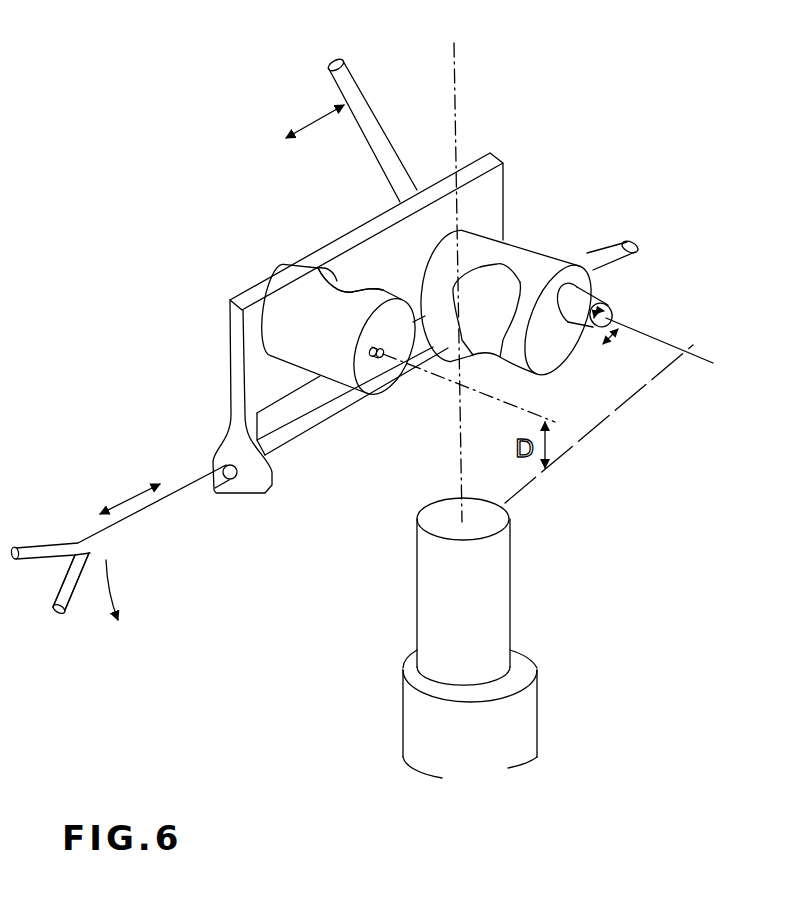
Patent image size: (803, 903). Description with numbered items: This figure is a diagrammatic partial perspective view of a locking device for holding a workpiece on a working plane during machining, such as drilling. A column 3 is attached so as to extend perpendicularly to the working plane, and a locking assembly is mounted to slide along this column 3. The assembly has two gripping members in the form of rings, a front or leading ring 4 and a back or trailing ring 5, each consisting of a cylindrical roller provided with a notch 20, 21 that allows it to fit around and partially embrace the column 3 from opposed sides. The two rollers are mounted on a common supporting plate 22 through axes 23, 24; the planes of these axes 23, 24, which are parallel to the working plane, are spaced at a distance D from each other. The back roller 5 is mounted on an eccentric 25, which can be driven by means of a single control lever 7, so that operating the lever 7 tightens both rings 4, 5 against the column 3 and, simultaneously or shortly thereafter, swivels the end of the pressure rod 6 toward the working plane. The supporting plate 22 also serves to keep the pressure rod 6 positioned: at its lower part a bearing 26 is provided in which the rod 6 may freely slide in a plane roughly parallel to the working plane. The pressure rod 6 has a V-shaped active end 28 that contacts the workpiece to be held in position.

The column 3 is at (511, 598).
The front or leading ring 4 is at (295, 297).
The back or trailing ring 5 is at (538, 250).
The pressure rod 6 is at (160, 513).
The control lever 7 is at (368, 98).
The notch 20 is at (348, 285).
The notch 21 is at (486, 296).
The supporting plate 22 is at (437, 182).
The axis 23 is at (445, 382).
The axis 24 is at (660, 337).
The eccentric 25 is at (593, 291).
The bearing 26 is at (246, 486).
The V-shaped active end 28 is at (60, 579).